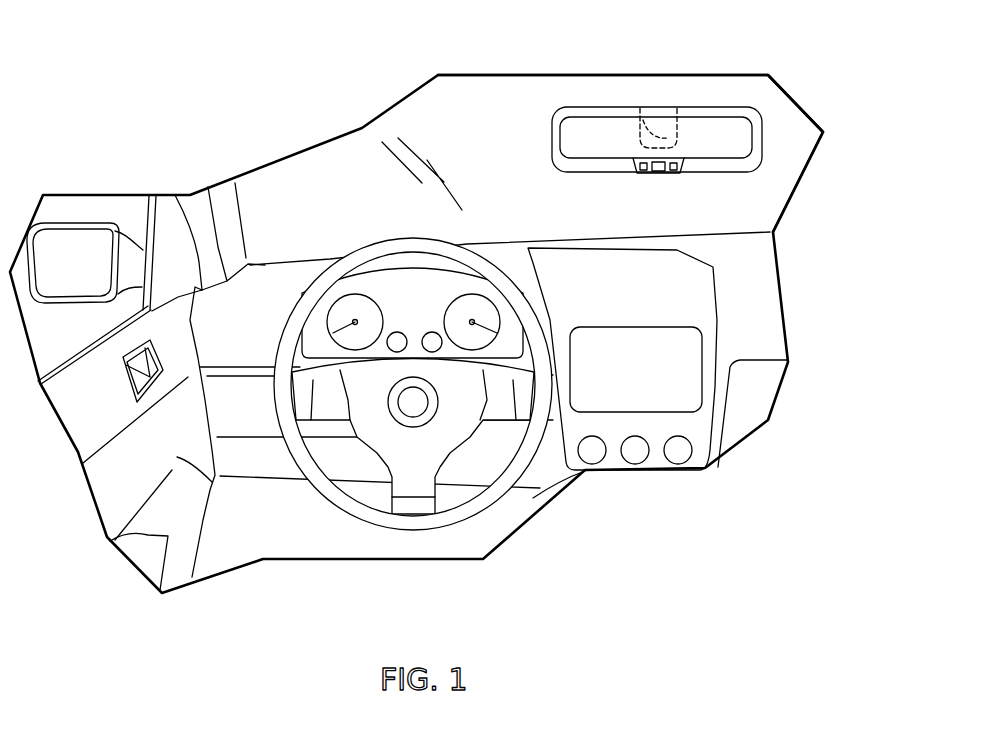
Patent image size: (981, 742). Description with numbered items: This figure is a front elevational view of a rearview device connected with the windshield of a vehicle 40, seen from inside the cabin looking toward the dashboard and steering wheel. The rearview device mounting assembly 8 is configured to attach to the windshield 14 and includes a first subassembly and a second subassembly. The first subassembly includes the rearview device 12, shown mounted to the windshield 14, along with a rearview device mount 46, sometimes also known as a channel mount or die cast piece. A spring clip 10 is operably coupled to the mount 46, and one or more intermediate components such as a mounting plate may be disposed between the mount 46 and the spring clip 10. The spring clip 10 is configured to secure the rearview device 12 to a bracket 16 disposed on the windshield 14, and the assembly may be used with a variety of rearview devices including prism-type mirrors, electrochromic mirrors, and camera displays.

The rearview device mounting assembly 8 is at (769, 107).
The spring clip 10 is at (668, 135).
The rearview device 12 is at (713, 165).
The windshield 14 is at (508, 149).
The bracket 16 is at (673, 115).
The vehicle 40 is at (260, 580).
The rearview device mount 46 is at (642, 107).